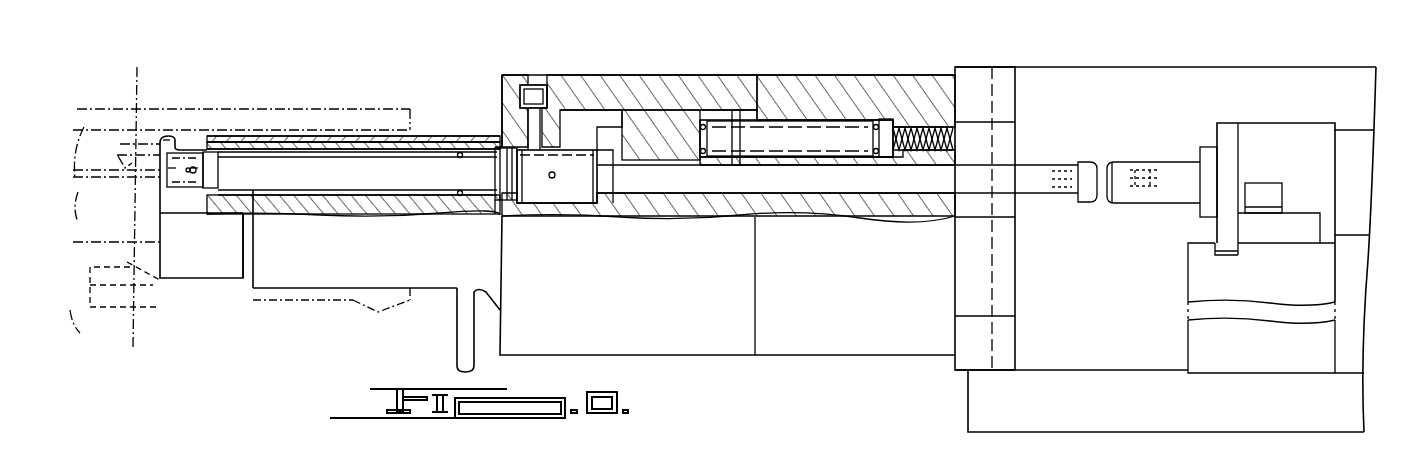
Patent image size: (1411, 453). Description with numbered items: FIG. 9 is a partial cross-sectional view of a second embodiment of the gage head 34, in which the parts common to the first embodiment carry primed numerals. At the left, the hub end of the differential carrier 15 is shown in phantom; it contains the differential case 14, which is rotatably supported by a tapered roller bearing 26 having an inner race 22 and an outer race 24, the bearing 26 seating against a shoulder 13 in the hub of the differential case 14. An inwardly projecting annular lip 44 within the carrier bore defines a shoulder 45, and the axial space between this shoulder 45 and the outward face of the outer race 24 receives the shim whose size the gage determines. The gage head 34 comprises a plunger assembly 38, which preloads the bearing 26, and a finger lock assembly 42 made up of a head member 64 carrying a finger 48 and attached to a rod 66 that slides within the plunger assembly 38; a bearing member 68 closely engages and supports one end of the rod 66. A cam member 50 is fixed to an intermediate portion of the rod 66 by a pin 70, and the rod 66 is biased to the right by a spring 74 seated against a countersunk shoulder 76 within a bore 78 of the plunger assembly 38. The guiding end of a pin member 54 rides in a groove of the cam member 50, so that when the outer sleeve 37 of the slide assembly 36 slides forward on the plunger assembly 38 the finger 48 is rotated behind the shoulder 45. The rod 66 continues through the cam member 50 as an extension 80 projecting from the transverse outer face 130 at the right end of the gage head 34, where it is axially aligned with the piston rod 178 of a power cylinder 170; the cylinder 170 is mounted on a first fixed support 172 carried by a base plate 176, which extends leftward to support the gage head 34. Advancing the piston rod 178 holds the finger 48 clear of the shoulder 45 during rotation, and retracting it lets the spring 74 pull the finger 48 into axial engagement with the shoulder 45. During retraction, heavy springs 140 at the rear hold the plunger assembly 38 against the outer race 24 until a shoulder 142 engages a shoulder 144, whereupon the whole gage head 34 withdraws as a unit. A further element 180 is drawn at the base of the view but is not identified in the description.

The shoulder 13 is at (241, 169).
The differential case 14 is at (115, 306).
The differential carrier 15 is at (160, 313).
The inner race 22 is at (158, 258).
The outer race 24 is at (125, 324).
The tapered roller bearing 26 is at (137, 78).
The gage head 34 is at (668, 313).
The slide assembly 36 is at (387, 126).
The outer sleeve 37 is at (345, 136).
The plunger assembly 38 is at (228, 268).
The finger lock assembly 42 is at (222, 150).
The annular lip 44 is at (195, 138).
The shoulder 45 is at (163, 283).
The finger 48 is at (169, 135).
The cam member 50 is at (540, 190).
The pin member 54 is at (546, 105).
The head member 64 is at (193, 187).
The rod 66 is at (347, 182).
The bearing member 68 is at (265, 150).
The pin 70 is at (555, 178).
The spring 74 is at (492, 146).
The countersunk shoulder 76 is at (460, 199).
The bore 78 is at (323, 136).
The extension 80 is at (837, 179).
The transverse outer face 130 is at (1008, 110).
The heavy springs 140 is at (721, 124).
The shoulder 142 is at (592, 124).
The shoulder 144 is at (650, 110).
The power cylinder 170 is at (1303, 125).
The first fixed support 172 is at (1293, 363).
The base plate 176 is at (1168, 413).
The piston rod 178 is at (1113, 160).
The base 180 is at (1006, 447).